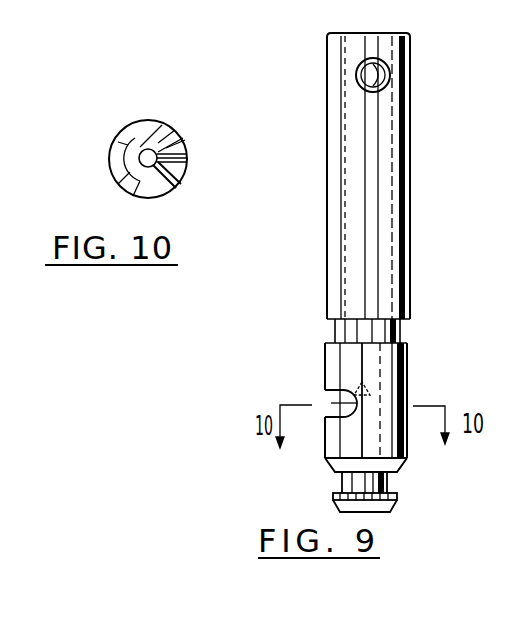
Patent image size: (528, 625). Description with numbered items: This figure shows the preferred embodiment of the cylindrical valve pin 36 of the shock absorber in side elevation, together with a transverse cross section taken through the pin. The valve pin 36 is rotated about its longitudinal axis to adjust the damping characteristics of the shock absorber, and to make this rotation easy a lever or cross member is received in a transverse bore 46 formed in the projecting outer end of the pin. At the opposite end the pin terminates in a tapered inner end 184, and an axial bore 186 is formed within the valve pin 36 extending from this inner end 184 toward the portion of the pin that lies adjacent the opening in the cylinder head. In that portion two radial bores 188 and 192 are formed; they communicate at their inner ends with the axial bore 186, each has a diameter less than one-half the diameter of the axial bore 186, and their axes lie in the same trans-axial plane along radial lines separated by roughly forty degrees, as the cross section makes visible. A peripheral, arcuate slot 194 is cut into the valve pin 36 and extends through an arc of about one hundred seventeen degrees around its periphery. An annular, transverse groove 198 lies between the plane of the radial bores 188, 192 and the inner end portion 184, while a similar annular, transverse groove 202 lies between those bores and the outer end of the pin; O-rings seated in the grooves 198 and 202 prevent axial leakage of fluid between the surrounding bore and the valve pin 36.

In FIG. 9, the cylindrical valve pin 36 is at (410, 174).
In FIG. 10, the cylindrical valve pin 36 is at (152, 120).
In FIG. 9, the transverse bore 46 is at (389, 73).
In FIG. 9, the annular transverse groove 202 is at (396, 332).
In FIG. 9, the peripheral arcuate slot 194 is at (328, 401).
In FIG. 9, the annular transverse groove 198 is at (392, 480).
In FIG. 9, the tapered inner end 184 is at (382, 508).
In FIG. 10, the axial bore 186 is at (162, 150).
In FIG. 10, the radial bore 188 is at (186, 160).
In FIG. 10, the radial bore 192 is at (173, 188).